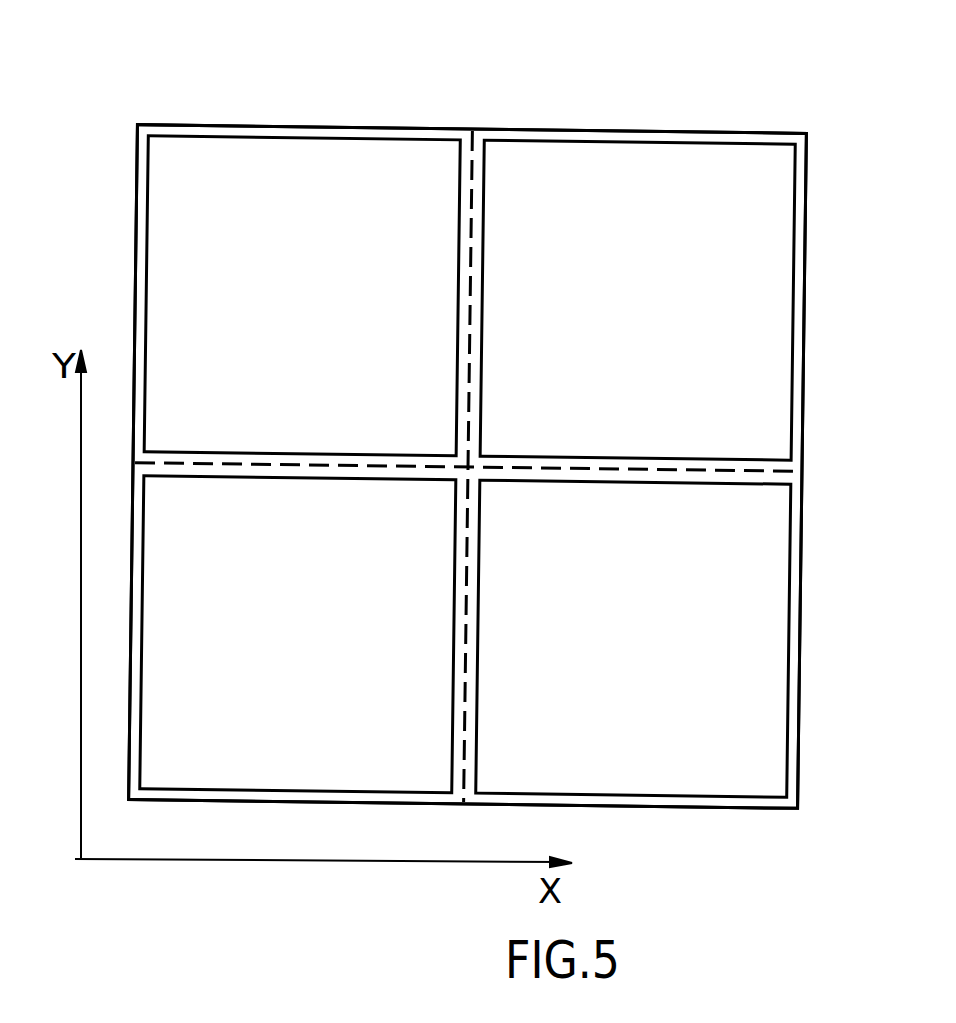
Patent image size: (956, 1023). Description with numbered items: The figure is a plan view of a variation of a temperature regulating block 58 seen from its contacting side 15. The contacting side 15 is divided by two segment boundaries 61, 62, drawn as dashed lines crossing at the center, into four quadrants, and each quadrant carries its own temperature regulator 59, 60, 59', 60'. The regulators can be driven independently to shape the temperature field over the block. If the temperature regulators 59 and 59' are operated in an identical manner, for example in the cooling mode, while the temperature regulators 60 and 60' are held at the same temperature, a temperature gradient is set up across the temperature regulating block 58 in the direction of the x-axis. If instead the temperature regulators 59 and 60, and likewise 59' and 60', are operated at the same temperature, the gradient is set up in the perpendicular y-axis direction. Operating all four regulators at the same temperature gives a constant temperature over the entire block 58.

The temperature regulating block 58 is at (180, 125).
The contacting side 15 is at (290, 137).
The segment boundary 62 is at (470, 207).
The segment boundary 61 is at (703, 470).
The temperature regulator 59 is at (271, 295).
The temperature regulator 60 is at (638, 247).
The temperature regulator 59' is at (297, 667).
The temperature regulator 60' is at (633, 670).